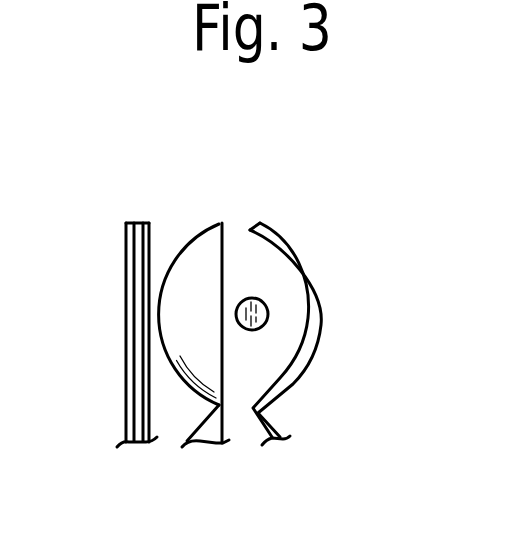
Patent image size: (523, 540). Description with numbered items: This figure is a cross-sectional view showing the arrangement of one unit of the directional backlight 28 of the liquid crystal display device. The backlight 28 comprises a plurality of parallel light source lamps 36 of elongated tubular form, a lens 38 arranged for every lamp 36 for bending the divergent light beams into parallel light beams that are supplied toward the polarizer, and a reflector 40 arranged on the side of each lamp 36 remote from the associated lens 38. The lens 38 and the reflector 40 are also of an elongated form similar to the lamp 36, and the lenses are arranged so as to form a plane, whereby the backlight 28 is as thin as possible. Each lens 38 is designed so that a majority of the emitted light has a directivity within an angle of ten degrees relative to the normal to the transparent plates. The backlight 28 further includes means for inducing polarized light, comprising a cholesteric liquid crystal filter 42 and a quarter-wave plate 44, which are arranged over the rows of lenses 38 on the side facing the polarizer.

The directional backlight 28 is at (274, 175).
The light source lamp 36 is at (265, 306).
The lens 38 is at (200, 253).
The reflector 40 is at (322, 331).
The cholesteric liquid crystal filter 42 is at (148, 408).
The quarter-wave plate 44 is at (127, 408).